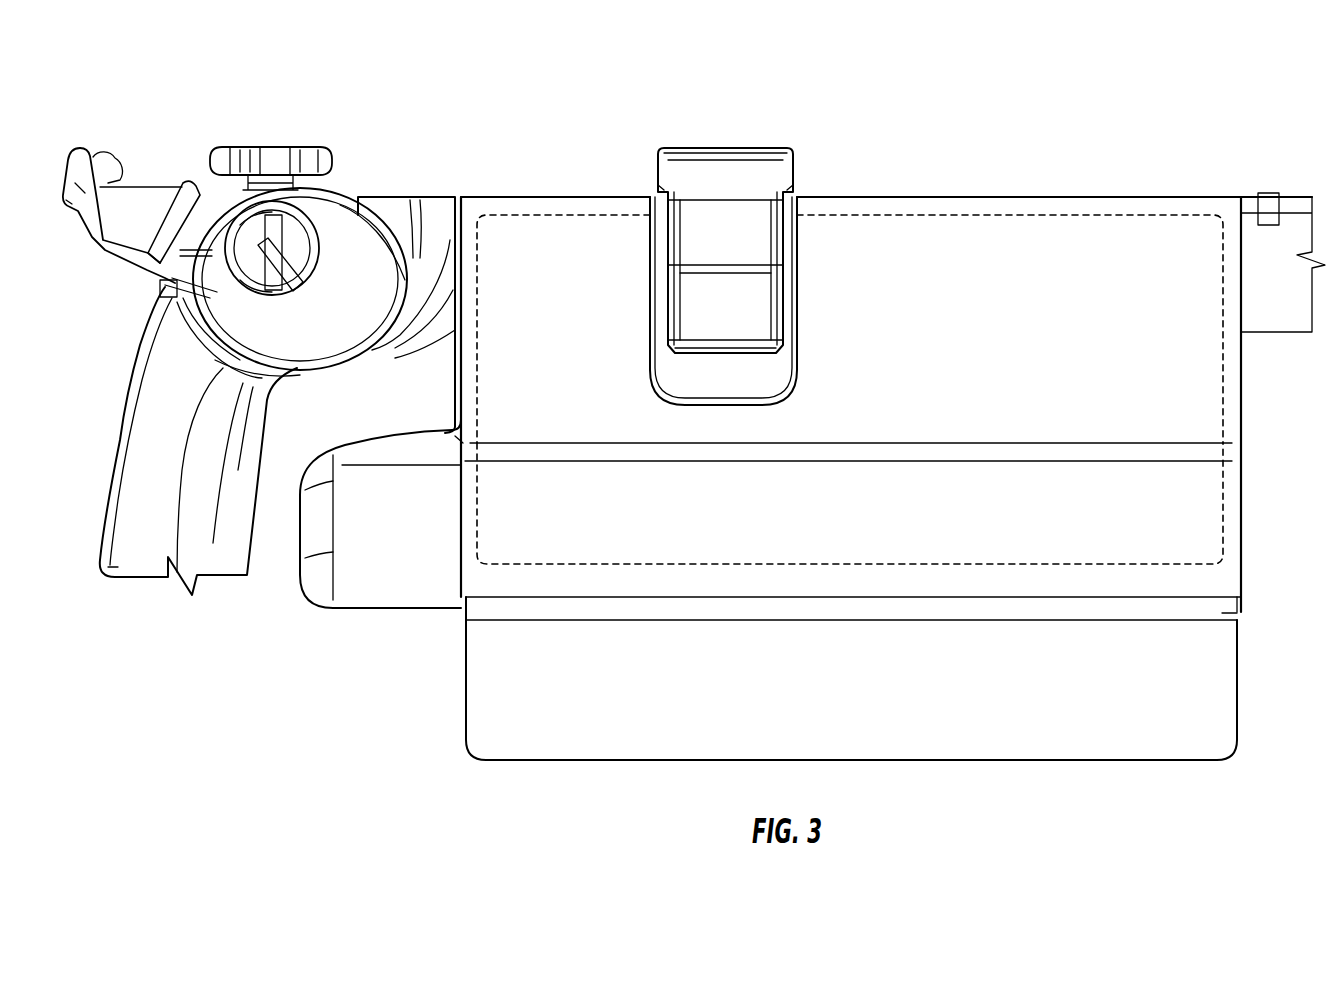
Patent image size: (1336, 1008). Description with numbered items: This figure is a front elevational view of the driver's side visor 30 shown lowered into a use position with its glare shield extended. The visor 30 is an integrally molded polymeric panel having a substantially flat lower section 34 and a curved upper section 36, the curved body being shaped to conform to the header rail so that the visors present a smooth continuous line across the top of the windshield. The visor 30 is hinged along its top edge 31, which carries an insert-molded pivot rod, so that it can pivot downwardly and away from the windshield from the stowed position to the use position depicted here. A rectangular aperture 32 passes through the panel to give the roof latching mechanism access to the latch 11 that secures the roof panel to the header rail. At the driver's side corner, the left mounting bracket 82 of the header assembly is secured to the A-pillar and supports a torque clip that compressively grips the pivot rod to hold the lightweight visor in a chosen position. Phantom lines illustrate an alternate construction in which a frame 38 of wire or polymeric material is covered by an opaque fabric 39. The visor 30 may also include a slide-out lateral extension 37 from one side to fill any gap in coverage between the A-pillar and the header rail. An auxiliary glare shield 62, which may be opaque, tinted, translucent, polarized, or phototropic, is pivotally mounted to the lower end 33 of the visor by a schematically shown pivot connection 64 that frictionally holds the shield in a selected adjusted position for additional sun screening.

The latch 11 is at (746, 174).
The driver's side visor 30 is at (1246, 441).
The top edge 31 is at (976, 196).
The rectangular aperture 32 is at (790, 289).
The lower end 33 is at (1245, 600).
The lower section 34 is at (1068, 532).
The upper section 36 is at (1080, 336).
The slide-out lateral extension 37 is at (385, 593).
The frame 38 is at (486, 364).
The fabric 39 is at (546, 238).
The auxiliary glare shield 62 is at (1060, 750).
The pivot connection 64 is at (1236, 617).
The left mounting bracket 82 is at (266, 412).